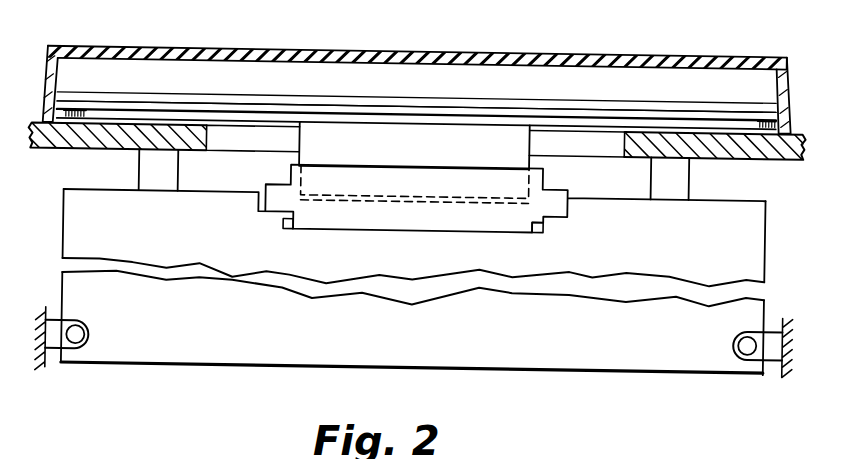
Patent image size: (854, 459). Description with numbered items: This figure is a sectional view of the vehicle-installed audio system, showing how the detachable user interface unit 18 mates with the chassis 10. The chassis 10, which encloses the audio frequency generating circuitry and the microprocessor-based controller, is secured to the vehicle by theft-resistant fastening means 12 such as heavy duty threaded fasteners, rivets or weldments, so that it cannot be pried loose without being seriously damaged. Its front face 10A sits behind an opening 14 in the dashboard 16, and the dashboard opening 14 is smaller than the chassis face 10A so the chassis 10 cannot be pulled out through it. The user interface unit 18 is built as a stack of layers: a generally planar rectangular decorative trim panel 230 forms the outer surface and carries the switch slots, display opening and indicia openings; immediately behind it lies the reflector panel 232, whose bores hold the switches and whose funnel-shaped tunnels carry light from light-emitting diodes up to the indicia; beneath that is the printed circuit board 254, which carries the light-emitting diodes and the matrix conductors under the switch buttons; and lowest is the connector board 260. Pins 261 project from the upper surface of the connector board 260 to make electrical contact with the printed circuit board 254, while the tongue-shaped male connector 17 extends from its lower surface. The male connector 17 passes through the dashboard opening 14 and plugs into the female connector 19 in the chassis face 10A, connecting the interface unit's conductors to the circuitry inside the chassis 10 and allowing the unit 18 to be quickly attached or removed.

The chassis 10 is at (399, 340).
The front face of chassis 10A is at (606, 187).
The theft-resistant fastening means 12 is at (90, 322).
The dashboard opening 14 is at (222, 140).
The dashboard 16 is at (68, 146).
The male connector 17 is at (420, 138).
The detachable user interface unit 18 is at (418, 67).
The female connector 19 is at (437, 179).
The trim panel 230 is at (559, 40).
The reflector panel 232 is at (558, 88).
The printed circuit board 254 is at (657, 100).
The connector board 260 is at (720, 123).
The pins 261 is at (72, 109).